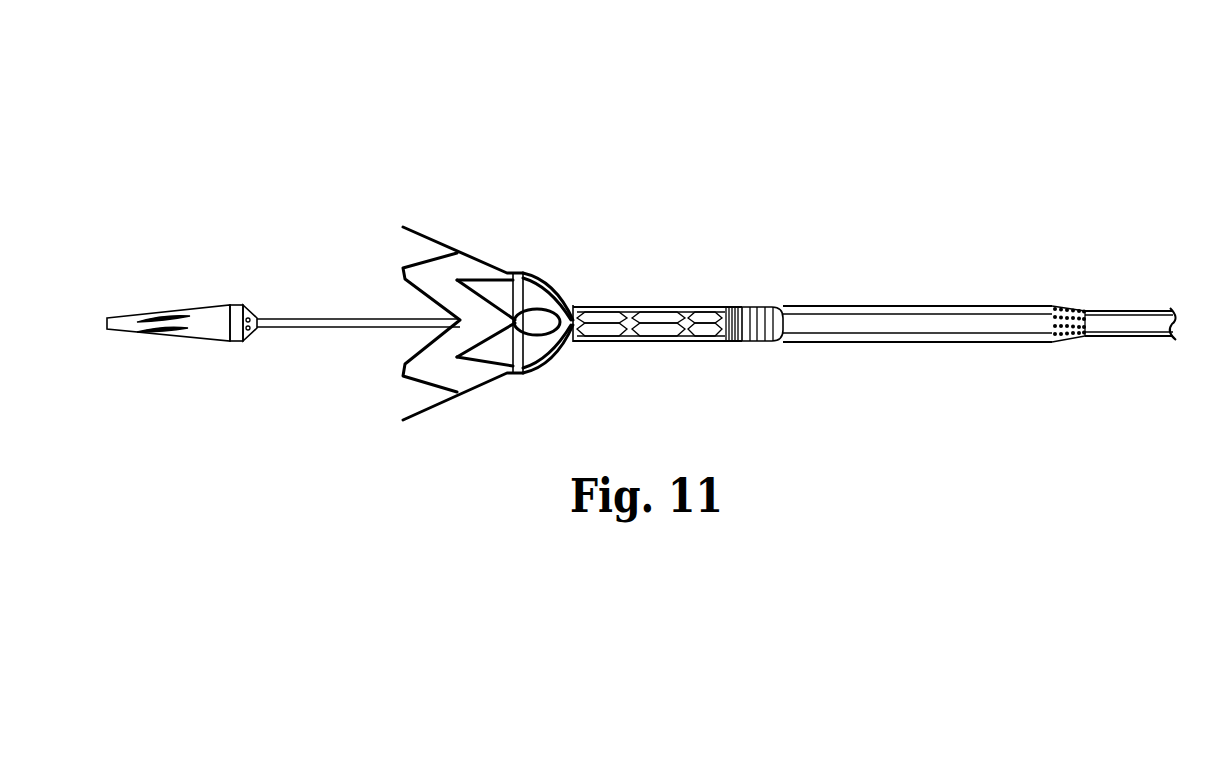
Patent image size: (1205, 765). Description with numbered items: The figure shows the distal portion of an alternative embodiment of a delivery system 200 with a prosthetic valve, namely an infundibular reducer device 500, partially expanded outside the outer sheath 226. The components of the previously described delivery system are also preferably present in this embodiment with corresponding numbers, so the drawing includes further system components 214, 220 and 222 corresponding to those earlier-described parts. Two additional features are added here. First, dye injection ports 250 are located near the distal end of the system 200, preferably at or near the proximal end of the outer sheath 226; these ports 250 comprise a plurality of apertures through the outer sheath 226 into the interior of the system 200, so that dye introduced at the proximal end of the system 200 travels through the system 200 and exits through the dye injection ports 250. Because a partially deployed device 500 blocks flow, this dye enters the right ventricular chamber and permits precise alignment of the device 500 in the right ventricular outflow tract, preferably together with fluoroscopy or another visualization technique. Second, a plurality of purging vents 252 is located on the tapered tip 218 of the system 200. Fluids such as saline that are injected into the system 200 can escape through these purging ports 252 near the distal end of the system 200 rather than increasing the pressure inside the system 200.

The system 200 is at (698, 140).
The infundibular reducer device 500 is at (502, 250).
The purging vents 252 is at (173, 312).
The tapered tip 218 is at (208, 330).
The inner shaft 214 is at (312, 323).
The outer sheath 226 is at (845, 313).
The connector 222 is at (760, 323).
The outer tube 220 is at (947, 320).
The dye injection ports 250 is at (1087, 307).